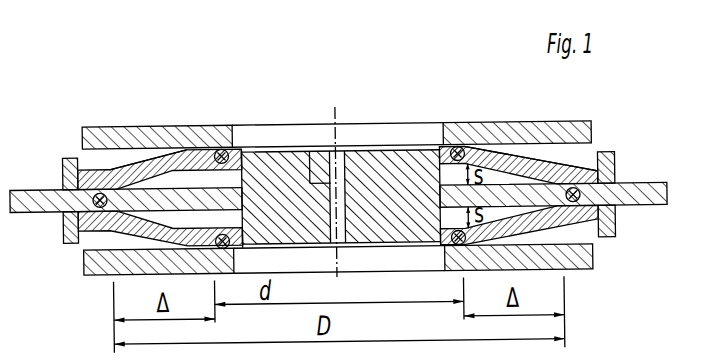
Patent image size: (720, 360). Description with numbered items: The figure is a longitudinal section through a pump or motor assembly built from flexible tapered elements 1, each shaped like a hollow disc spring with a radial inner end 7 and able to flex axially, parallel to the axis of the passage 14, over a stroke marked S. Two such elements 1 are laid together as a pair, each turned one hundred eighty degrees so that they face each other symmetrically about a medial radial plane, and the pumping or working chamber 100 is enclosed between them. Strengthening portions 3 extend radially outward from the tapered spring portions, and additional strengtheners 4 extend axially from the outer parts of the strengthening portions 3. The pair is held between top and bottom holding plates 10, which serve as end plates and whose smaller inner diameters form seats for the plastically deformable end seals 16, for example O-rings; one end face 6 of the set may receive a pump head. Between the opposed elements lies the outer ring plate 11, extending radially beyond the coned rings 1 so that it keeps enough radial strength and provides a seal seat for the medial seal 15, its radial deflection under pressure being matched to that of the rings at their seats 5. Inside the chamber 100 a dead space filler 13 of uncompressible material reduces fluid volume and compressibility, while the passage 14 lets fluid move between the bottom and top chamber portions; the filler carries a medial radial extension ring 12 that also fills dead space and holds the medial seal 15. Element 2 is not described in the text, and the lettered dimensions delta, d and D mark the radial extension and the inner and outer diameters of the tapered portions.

The tapered element 1 is at (412, 174).
The conical sleeve 2 is at (518, 158).
The strengthening portion 3 is at (531, 125).
The additional strengthener 4 is at (608, 156).
The seat 5 is at (553, 154).
The end face 6 is at (467, 159).
The radial inner end 7 is at (221, 165).
The holding plate 10 is at (126, 172).
The ring plate 11 is at (126, 228).
The medial radial extension ring 12 is at (160, 108).
The dead space filler 13 is at (341, 161).
The passage 14 is at (315, 117).
The medial seal 15 is at (89, 162).
The end seal 16 is at (260, 163).
The working chamber 100 is at (138, 198).